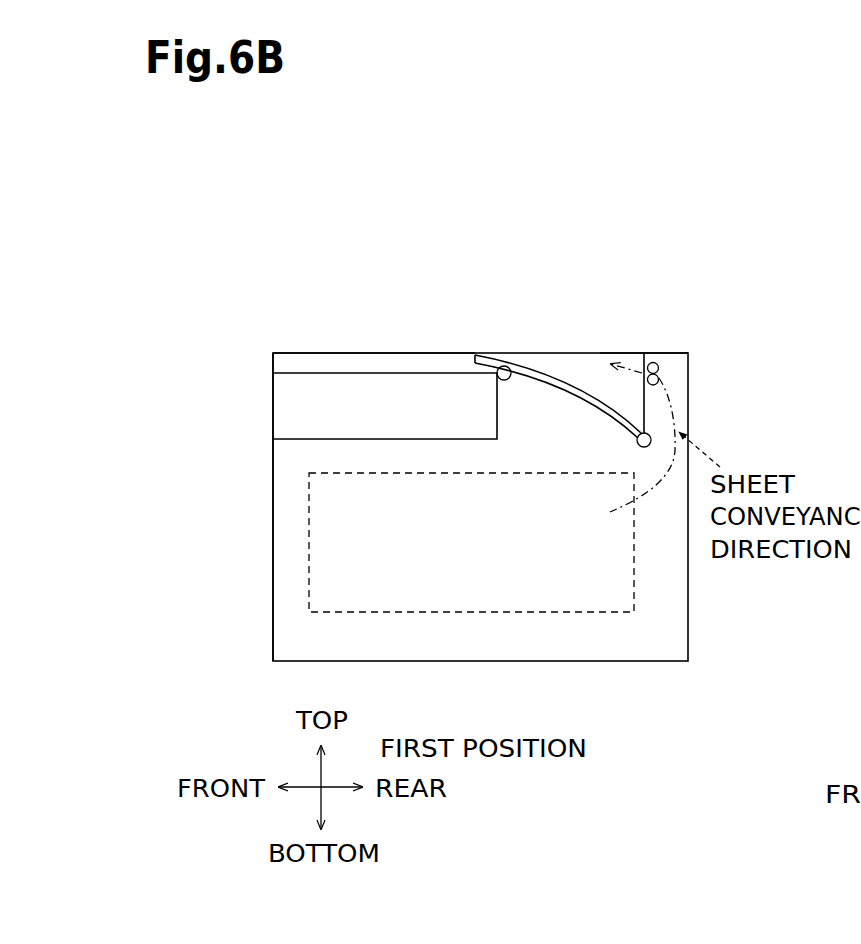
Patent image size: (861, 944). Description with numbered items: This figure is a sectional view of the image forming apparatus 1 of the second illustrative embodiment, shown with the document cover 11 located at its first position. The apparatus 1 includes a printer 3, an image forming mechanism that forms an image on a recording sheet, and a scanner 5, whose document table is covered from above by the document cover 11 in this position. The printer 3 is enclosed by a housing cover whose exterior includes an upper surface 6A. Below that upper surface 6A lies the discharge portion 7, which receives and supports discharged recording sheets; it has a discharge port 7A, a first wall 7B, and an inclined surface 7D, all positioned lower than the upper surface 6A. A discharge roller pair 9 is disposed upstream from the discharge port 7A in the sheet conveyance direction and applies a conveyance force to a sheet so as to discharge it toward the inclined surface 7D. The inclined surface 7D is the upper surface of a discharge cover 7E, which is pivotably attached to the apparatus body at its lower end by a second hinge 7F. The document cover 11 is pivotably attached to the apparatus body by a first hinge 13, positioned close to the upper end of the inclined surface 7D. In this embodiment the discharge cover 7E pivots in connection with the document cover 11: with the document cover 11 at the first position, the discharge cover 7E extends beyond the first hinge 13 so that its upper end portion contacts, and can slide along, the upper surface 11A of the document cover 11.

The image forming apparatus 1 is at (427, 307).
The printer 3 is at (470, 616).
The scanner 5 is at (272, 413).
The upper surface of housing cover 6A is at (663, 355).
The discharge portion 7 is at (603, 385).
The discharge port 7A is at (633, 353).
The first wall 7B is at (630, 402).
The inclined surface 7D is at (567, 375).
The discharge cover 7E is at (543, 362).
The second hinge 7F is at (638, 446).
The discharge roller pair 9 is at (659, 381).
The document cover 11 is at (340, 352).
The upper surface of document cover 11A is at (438, 353).
The first hinge 13 is at (508, 379).